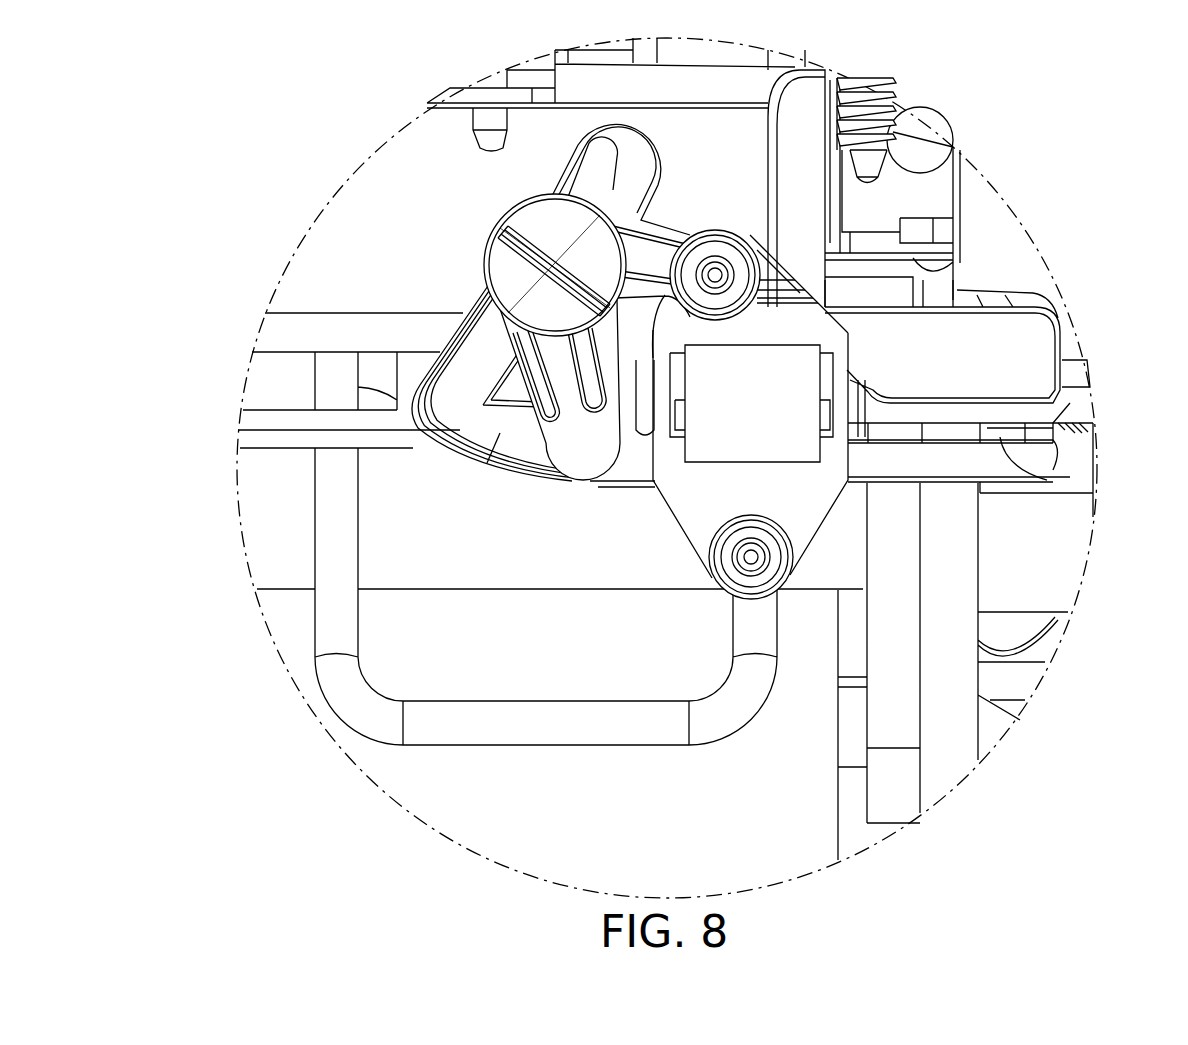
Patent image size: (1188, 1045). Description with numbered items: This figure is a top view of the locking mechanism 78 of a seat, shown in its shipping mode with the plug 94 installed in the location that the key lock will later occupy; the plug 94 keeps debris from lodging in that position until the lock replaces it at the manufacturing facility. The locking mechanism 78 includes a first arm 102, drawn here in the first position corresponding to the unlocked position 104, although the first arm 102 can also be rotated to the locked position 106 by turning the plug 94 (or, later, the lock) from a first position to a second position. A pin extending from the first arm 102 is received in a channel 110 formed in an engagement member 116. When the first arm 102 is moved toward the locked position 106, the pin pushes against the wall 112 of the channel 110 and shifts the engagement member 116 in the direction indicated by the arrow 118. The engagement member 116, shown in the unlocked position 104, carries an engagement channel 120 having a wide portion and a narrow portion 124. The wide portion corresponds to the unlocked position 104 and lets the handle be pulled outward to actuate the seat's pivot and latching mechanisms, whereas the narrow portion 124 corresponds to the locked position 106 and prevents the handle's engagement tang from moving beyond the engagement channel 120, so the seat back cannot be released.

The locking mechanism 78 is at (472, 222).
The plug 94 is at (505, 268).
The first arm 102 is at (560, 440).
The unlocked position 104 is at (590, 445).
The locked position 106 is at (458, 407).
The channel 110 is at (473, 473).
The wall 112 is at (433, 377).
The engagement member 116 is at (1027, 338).
The arrow 118 is at (238, 430).
The engagement channel 120 is at (1068, 422).
The narrow portion 124 is at (1070, 477).